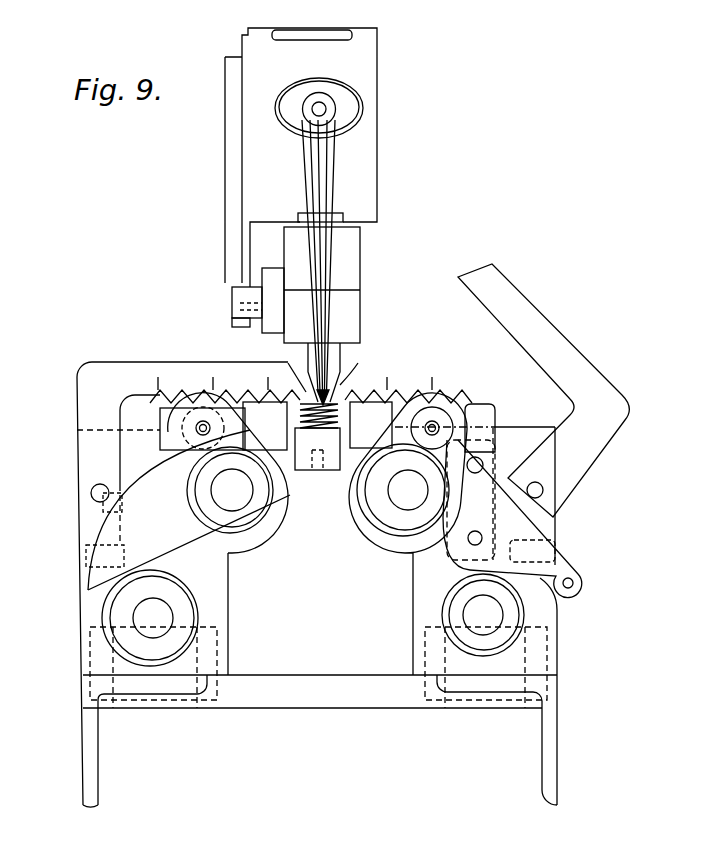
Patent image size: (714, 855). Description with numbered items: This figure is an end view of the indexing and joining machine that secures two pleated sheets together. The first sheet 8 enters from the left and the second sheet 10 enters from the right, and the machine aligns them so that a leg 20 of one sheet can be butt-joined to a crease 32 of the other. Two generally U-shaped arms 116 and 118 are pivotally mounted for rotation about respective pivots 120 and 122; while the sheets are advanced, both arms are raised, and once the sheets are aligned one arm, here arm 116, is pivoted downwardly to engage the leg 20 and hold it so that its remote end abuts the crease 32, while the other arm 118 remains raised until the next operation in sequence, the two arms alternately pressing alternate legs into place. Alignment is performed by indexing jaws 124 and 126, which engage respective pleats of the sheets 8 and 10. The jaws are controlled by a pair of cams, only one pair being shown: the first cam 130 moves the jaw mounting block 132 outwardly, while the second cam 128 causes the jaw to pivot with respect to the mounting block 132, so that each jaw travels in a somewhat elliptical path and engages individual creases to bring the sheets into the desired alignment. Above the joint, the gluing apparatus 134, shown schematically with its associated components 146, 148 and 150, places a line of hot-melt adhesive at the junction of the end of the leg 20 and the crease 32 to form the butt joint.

The first sheet 8 is at (207, 392).
The second sheet 10 is at (437, 383).
The leg 20 is at (305, 385).
The crease 32 is at (347, 385).
The arm 116 is at (572, 357).
The arm 118 is at (90, 365).
The pivot 120 is at (548, 493).
The pivot 122 is at (92, 490).
The indexing jaw 124 is at (342, 385).
The indexing jaw 126 is at (300, 472).
The cam 128 is at (558, 638).
The cam 130 is at (104, 600).
The jaw mounting block 132 is at (470, 410).
The gluing apparatus 134 is at (227, 168).
The strands 146 is at (333, 168).
The reel 148 is at (368, 108).
The guide bar 150 is at (343, 215).